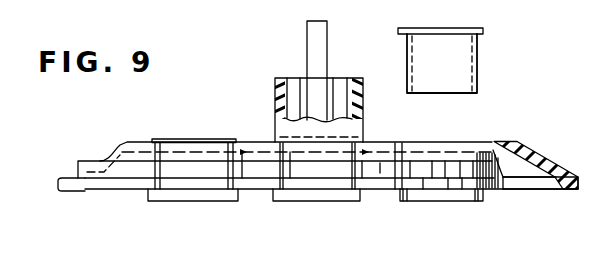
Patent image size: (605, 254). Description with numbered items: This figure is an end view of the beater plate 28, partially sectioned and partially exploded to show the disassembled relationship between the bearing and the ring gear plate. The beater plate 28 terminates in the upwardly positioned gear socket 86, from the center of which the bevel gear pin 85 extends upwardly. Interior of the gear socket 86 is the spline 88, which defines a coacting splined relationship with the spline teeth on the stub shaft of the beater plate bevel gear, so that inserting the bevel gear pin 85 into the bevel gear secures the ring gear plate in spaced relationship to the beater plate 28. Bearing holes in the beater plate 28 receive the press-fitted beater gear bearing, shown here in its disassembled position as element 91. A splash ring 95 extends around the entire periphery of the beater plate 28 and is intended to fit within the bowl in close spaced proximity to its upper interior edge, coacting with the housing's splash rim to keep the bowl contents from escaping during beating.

The beater plate 28 is at (540, 107).
The bevel gear pin 85 is at (313, 31).
The gear socket 86 is at (277, 97).
The spline 88 is at (300, 79).
The lug 91 is at (173, 140).
The splash ring 95 is at (64, 177).